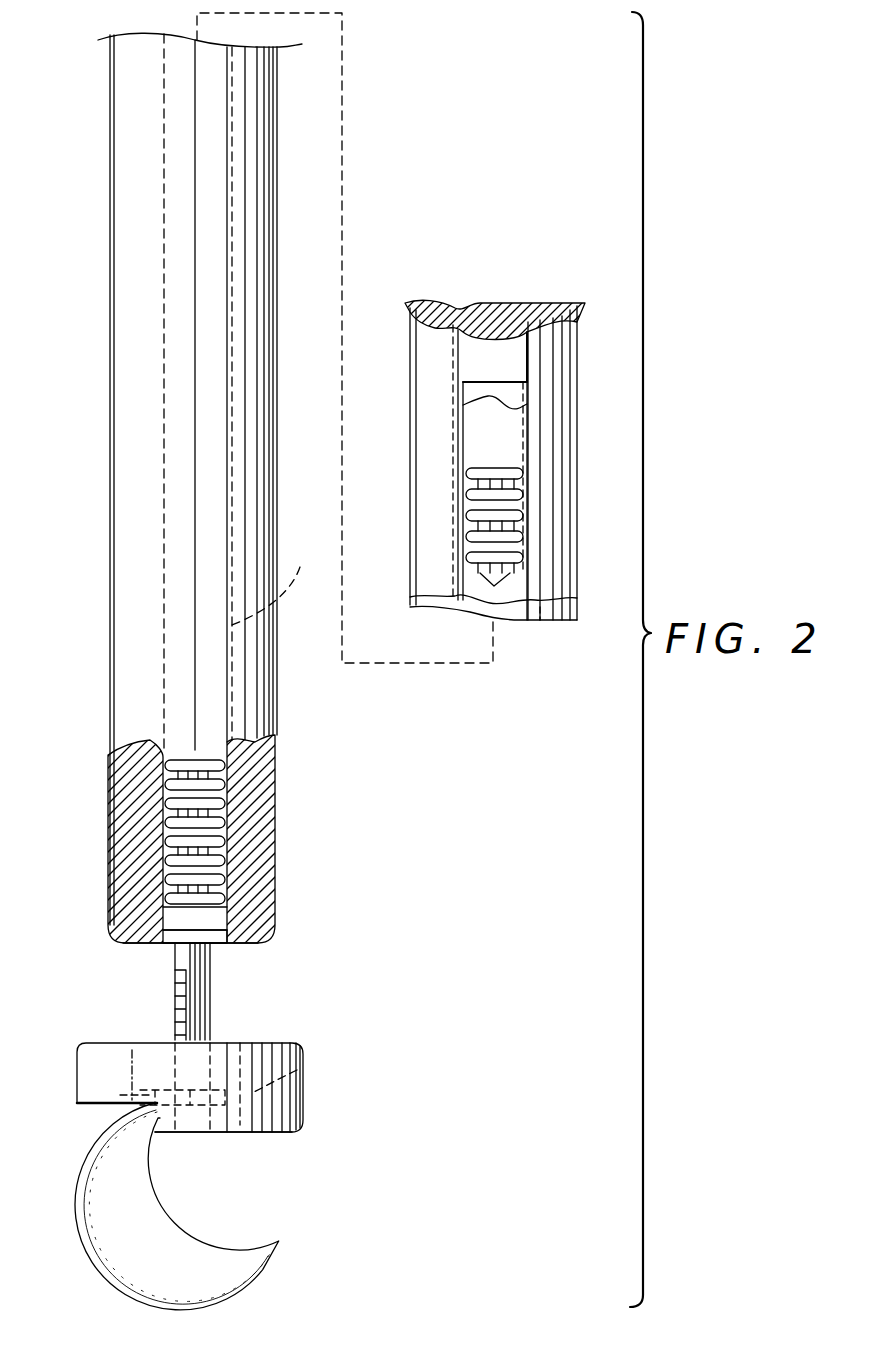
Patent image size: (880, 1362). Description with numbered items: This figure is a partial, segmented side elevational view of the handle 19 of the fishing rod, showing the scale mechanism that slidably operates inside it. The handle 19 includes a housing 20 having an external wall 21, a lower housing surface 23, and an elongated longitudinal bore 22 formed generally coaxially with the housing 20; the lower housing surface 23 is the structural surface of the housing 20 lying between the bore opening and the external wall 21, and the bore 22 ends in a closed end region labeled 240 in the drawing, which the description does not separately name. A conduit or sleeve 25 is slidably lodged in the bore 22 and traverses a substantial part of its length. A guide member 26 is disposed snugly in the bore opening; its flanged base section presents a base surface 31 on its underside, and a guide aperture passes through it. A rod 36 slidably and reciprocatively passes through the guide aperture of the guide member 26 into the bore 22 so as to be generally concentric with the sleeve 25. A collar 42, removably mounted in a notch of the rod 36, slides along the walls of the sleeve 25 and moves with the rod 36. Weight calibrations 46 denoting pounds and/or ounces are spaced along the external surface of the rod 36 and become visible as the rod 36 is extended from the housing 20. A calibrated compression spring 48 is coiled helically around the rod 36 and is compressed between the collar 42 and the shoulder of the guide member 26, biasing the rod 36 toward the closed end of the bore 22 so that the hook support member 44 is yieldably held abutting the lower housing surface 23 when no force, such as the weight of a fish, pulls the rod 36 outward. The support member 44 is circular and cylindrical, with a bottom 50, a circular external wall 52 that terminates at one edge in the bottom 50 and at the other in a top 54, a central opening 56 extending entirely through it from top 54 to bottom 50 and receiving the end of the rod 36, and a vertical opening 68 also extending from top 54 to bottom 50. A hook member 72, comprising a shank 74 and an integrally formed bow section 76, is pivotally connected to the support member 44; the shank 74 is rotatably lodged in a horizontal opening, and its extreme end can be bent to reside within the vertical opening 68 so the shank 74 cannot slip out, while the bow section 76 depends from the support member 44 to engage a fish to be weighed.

The handle 19 is at (284, 338).
The housing 20 is at (243, 825).
The external wall 21 is at (128, 375).
The longitudinal bore 22 is at (485, 355).
The lower housing surface 23 is at (118, 945).
The sleeve 25 is at (480, 395).
The guide member 26 is at (165, 950).
The base surface 31 is at (213, 945).
The rod 36 is at (220, 1028).
The collar 42 is at (470, 478).
The hook support member 44 is at (243, 1143).
The weight calibrations 46 is at (186, 1005).
The calibrated compression spring 48 is at (510, 522).
The bottom 50 is at (132, 1040).
The circular external wall 52 is at (299, 1134).
The top 54 is at (274, 1133).
The opening 56 is at (180, 1135).
The vertical opening 68 is at (299, 1070).
The hook member 72 is at (88, 1258).
The shank 74 is at (130, 1125).
The bow section 76 is at (247, 1273).
The plug end face 240 is at (282, 928).